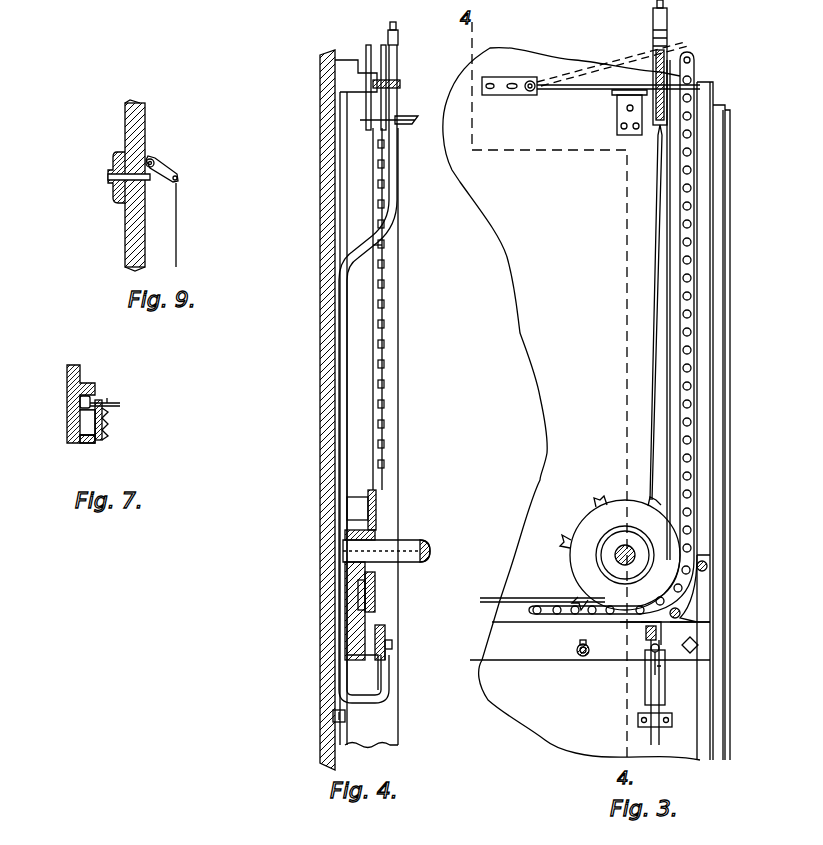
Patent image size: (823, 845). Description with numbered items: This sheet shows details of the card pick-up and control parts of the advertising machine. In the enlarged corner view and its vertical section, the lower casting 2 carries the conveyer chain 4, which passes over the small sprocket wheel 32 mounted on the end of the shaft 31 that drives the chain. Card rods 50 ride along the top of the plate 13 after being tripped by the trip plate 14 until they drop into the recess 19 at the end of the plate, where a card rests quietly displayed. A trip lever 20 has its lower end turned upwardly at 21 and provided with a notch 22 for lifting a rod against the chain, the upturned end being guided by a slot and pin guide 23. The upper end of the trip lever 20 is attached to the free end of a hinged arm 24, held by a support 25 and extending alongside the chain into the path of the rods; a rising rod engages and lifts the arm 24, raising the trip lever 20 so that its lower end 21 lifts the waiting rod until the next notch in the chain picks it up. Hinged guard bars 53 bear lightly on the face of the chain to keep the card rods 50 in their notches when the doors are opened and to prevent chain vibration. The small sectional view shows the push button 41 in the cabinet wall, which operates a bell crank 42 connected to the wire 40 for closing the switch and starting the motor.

In FIG. 7, the lower casting 2 is at (67, 410).
In FIG. 4, the lower casting 2 is at (350, 606).
In FIG. 7, the conveyer chain 4 is at (80, 402).
In FIG. 4, the conveyer chain 4 is at (381, 246).
In FIG. 3, the conveyer chain 4 is at (688, 283).
In FIG. 7, the plate 13 is at (95, 441).
In FIG. 4, the plate 13 is at (385, 631).
In FIG. 3, the plate 13 is at (590, 629).
In FIG. 7, the trip plate 14 is at (103, 433).
In FIG. 3, the recess 19 is at (660, 614).
In FIG. 4, the trip lever 20 is at (391, 175).
In FIG. 3, the trip lever 20 is at (658, 354).
In FIG. 4, the upturned lower end 21 is at (383, 673).
In FIG. 3, the upturned lower end 21 is at (648, 672).
In FIG. 4, the notch 22 is at (392, 645).
In FIG. 3, the notch 22 is at (662, 641).
In FIG. 4, the slot and pin guide 23 is at (389, 651).
In FIG. 3, the slot and pin guide 23 is at (661, 655).
In FIG. 4, the hinged arm 24 is at (399, 85).
In FIG. 3, the hinged arm 24 is at (580, 92).
In FIG. 3, the support 25 is at (620, 116).
In FIG. 4, the shaft 31 is at (410, 549).
In FIG. 4, the sprocket wheel 32 is at (376, 520).
In FIG. 3, the sprocket wheel 32 is at (588, 530).
In FIG. 9, the wire 40 is at (178, 240).
In FIG. 9, the push button 41 is at (108, 178).
In FIG. 9, the bell crank 42 is at (170, 161).
In FIG. 3, the card rods 50 is at (694, 128).
In FIG. 3, the guard bars 53 is at (705, 527).